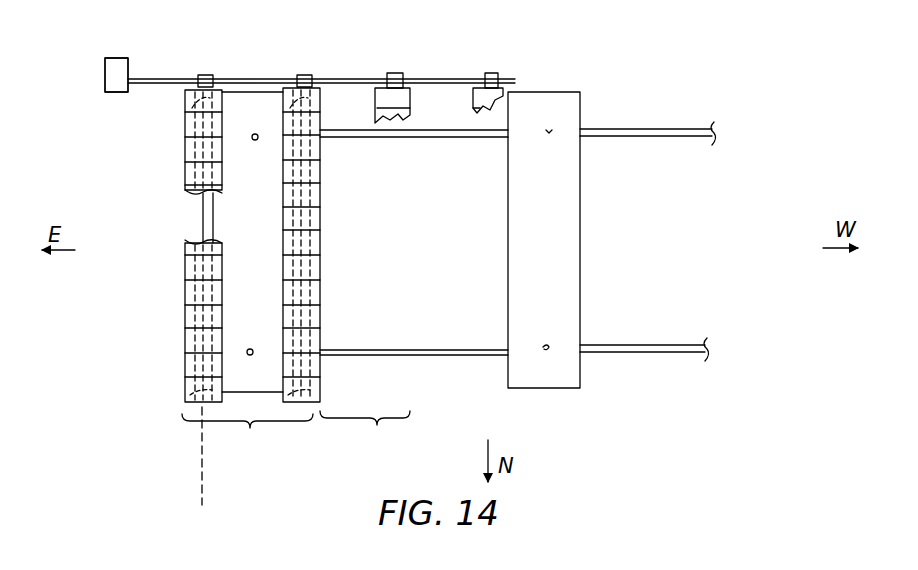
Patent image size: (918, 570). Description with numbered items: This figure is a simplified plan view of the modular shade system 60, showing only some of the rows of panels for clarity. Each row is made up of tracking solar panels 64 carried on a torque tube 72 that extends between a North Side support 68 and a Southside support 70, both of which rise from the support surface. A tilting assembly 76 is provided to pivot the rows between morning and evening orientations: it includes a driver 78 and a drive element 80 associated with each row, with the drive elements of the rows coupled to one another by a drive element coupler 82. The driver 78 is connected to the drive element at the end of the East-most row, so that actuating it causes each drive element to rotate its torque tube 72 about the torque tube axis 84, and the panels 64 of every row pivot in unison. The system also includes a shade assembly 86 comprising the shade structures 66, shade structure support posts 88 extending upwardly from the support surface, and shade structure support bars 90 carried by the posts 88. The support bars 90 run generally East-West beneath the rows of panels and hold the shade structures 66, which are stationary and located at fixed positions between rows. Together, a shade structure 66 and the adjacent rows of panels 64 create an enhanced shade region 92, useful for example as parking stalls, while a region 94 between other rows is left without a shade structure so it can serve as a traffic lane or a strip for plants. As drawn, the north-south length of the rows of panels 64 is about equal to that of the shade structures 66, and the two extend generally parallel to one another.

The modular shade system 60 is at (112, 438).
The tracking solar panels 64 is at (312, 222).
The shade structures 66 is at (266, 260).
The North Side support 68 is at (183, 386).
The Southside support 70 is at (185, 115).
The torque tube 72 is at (203, 218).
The tilting assembly 76 is at (116, 52).
The driver 78 is at (112, 89).
The drive element 80 is at (207, 75).
The drive element coupler 82 is at (265, 79).
The torque tube axis 84 is at (202, 458).
The shade assembly 86 is at (300, 458).
The shade structure support posts 88 is at (548, 130).
The shade structure support bars 90 is at (392, 137).
The enhanced shade regions 92 is at (247, 437).
The regions 94 is at (365, 434).